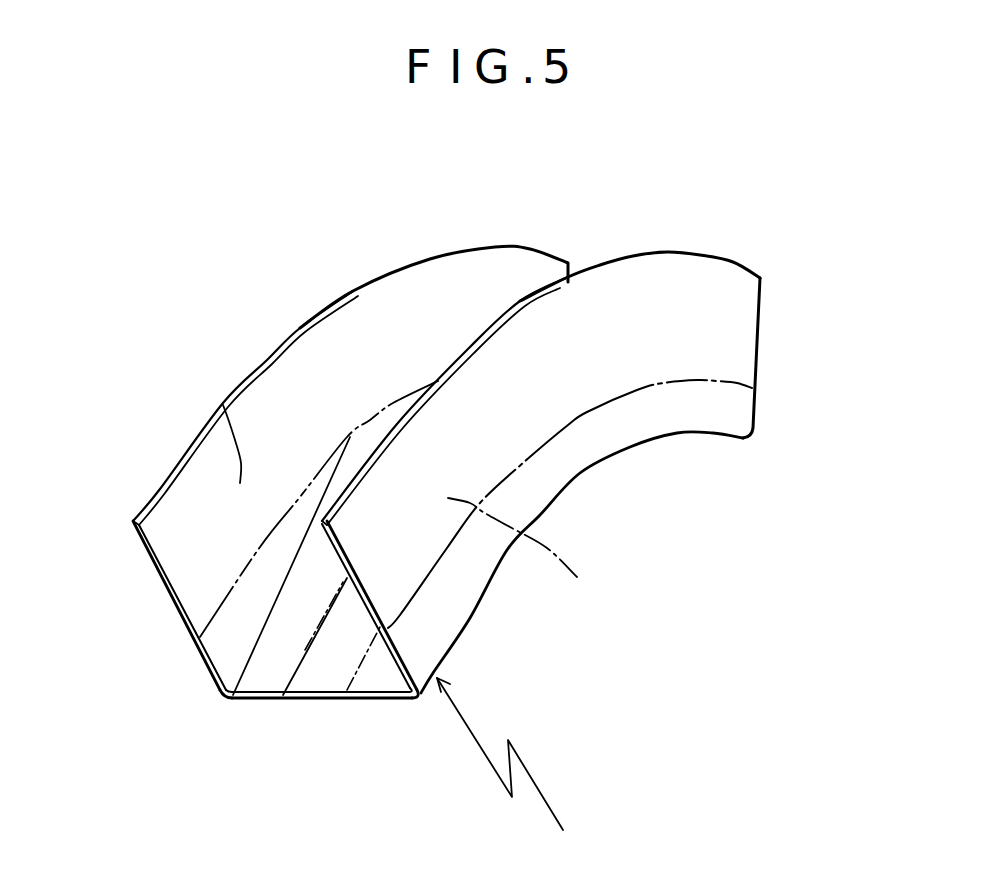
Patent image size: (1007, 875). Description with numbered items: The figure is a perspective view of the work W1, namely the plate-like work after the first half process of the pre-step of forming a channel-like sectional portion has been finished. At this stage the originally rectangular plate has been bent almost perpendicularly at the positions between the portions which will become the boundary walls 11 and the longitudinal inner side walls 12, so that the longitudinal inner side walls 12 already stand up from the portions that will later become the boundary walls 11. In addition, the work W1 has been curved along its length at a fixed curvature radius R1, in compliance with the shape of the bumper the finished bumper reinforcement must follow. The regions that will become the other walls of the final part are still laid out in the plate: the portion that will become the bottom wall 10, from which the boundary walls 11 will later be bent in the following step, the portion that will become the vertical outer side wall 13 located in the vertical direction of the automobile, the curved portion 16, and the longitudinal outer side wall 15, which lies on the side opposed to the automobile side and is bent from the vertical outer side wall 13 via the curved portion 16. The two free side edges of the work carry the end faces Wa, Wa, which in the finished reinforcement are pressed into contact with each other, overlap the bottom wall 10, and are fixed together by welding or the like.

The bottom wall 10 is at (330, 680).
The boundary walls 11 is at (267, 680).
The longitudinal inner side walls 12 is at (210, 667).
The vertical outer side wall 13 is at (200, 605).
The longitudinal outer side wall 15 is at (270, 387).
The curved portion 16 is at (223, 405).
The end faces Wa is at (397, 427).
The work W1 is at (765, 318).
The curvature radius R1 is at (516, 754).